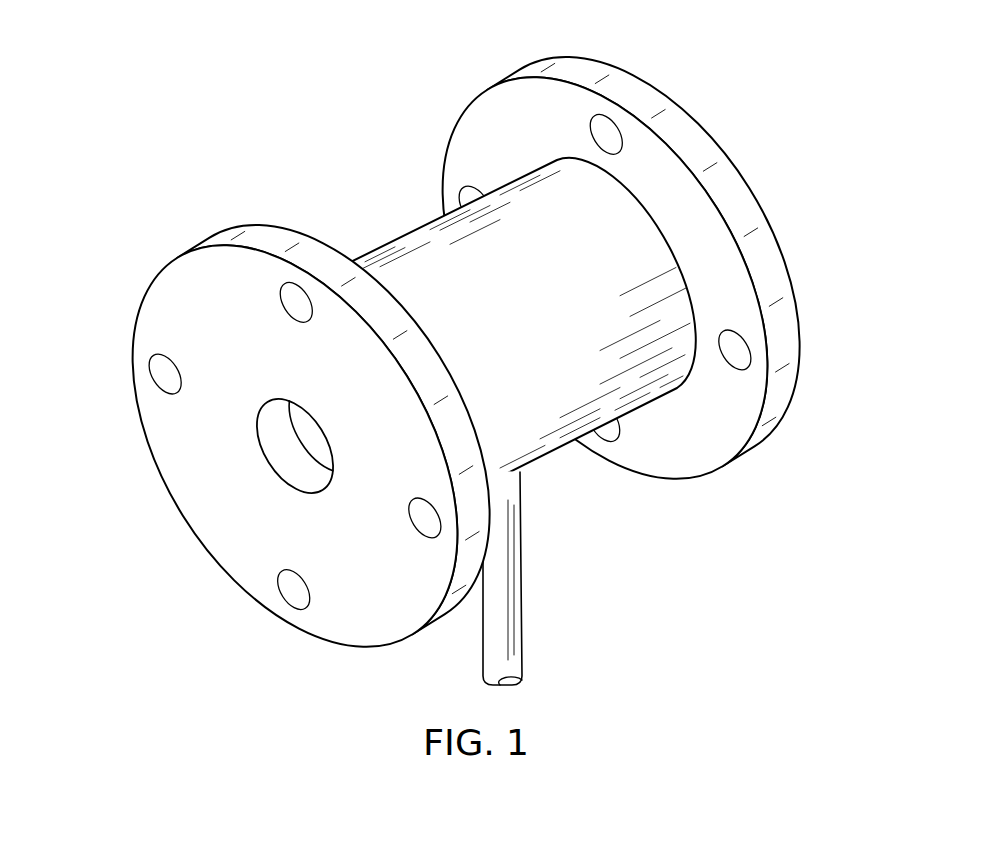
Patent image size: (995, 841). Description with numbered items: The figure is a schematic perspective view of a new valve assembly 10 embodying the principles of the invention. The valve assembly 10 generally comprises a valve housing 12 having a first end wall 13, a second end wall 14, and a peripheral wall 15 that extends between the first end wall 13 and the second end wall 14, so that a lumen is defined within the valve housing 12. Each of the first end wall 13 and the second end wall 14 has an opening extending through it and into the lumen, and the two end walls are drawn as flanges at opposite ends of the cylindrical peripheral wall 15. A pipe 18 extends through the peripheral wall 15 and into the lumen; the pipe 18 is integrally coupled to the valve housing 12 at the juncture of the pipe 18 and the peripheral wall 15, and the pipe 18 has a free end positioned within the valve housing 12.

The valve assembly 10 is at (185, 645).
The valve housing 12 is at (527, 118).
The first end wall 13 is at (688, 117).
The second end wall 14 is at (150, 445).
The peripheral wall 15 is at (420, 248).
The pipe 18 is at (510, 602).